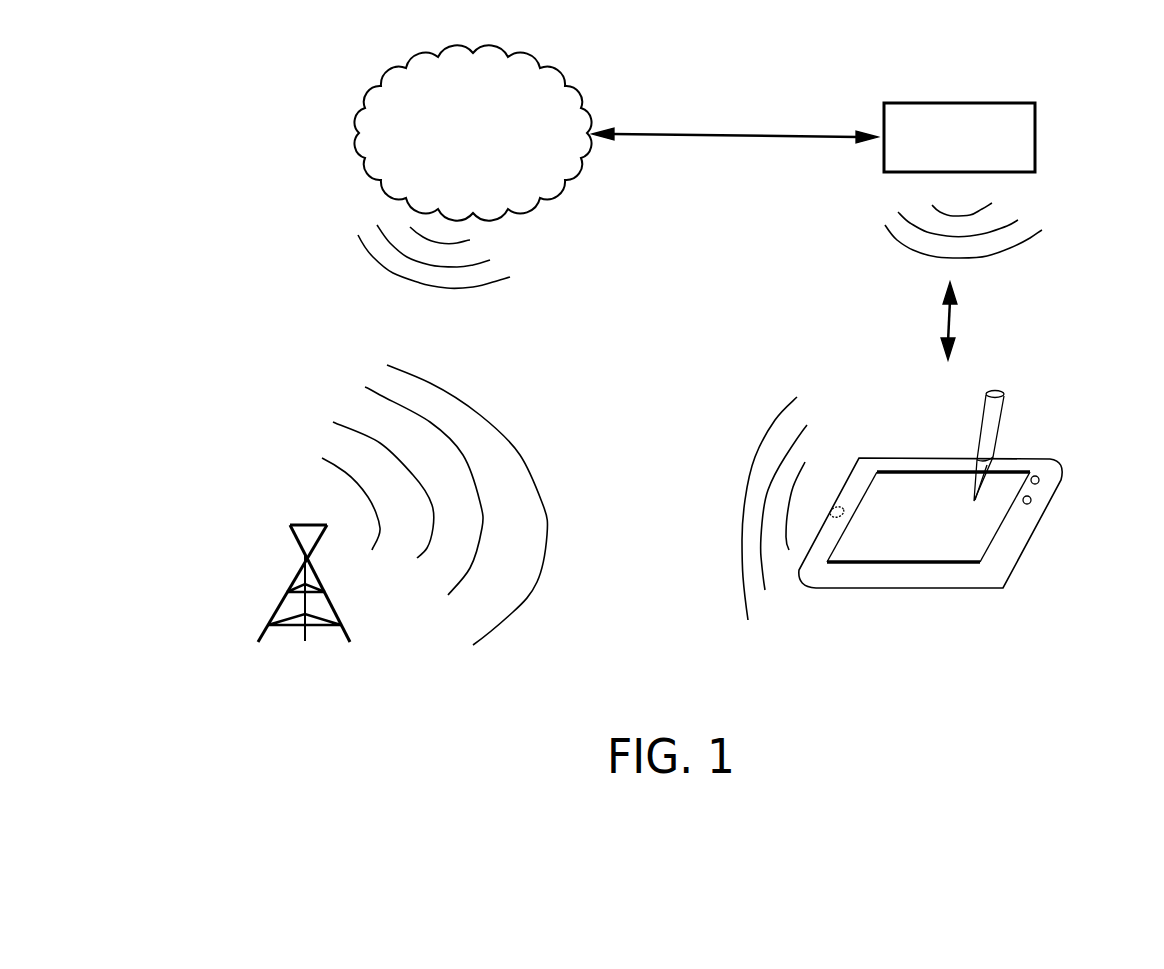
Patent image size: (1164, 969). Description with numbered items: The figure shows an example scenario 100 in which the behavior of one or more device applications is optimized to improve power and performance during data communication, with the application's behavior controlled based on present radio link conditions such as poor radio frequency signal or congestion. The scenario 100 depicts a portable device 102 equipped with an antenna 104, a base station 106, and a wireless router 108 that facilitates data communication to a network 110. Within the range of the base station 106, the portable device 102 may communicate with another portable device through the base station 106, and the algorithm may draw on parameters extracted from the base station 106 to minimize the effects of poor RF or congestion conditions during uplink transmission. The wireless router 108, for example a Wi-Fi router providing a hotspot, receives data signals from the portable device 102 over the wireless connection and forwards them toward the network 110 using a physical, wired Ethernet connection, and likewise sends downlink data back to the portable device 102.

The scenario 100 is at (236, 95).
The portable device 102 is at (1062, 449).
The antenna 104 is at (836, 497).
The base station 106 is at (283, 519).
The wireless router 108 is at (963, 180).
The network 110 is at (473, 166).